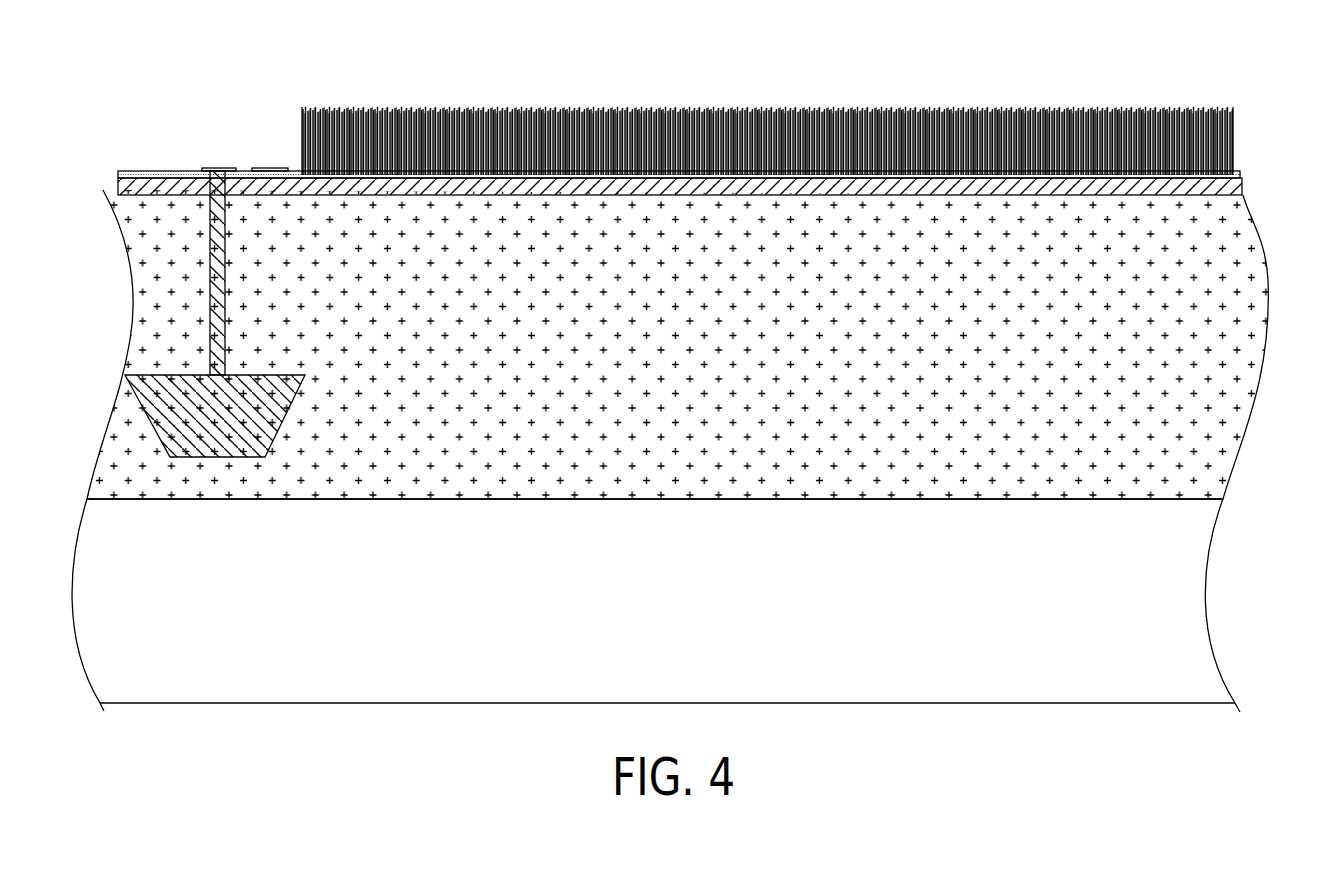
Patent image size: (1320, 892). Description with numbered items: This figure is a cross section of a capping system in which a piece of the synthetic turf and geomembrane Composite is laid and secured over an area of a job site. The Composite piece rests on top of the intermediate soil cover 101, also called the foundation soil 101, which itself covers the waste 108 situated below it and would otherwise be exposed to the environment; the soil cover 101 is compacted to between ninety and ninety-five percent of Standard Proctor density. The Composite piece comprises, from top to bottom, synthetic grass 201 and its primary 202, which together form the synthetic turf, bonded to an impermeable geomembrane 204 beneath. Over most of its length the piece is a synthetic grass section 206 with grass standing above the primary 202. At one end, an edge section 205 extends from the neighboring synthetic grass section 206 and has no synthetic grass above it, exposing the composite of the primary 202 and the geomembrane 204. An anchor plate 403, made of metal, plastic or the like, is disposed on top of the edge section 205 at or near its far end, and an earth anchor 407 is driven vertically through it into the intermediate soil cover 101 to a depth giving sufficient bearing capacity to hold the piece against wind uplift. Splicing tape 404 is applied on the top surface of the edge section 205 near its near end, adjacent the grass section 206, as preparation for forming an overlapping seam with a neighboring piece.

The intermediate soil cover 101 is at (1235, 380).
The waste 108 is at (1190, 590).
The synthetic grass 201 is at (1222, 108).
The primary 202 is at (118, 175).
The impermeable geomembrane 204 is at (1224, 189).
The edge section 205 is at (172, 162).
The synthetic grass section 206 is at (665, 89).
The anchor plate 403 is at (224, 195).
The splicing tape 404 is at (268, 168).
The earth anchor 407 is at (235, 429).